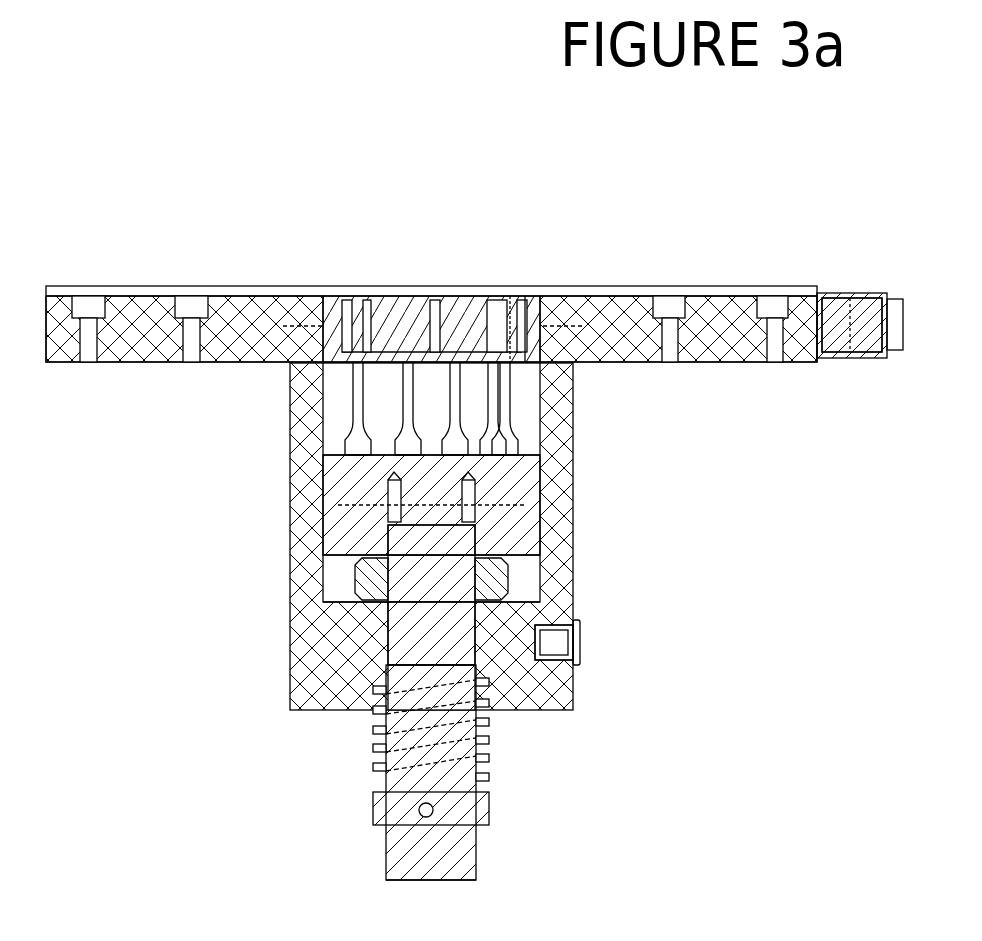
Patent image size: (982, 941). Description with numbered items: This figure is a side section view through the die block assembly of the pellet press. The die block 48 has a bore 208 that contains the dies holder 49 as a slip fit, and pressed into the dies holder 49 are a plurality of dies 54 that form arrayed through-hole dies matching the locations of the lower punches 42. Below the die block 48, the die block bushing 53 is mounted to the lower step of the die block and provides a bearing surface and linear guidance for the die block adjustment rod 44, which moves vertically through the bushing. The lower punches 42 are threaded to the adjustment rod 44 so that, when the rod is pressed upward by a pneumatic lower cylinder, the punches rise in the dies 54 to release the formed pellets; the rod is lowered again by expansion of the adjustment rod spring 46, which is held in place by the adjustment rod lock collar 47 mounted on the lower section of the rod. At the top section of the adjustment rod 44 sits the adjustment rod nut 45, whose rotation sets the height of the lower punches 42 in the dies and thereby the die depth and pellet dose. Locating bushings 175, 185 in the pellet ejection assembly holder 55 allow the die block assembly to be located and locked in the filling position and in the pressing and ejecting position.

The lower punches 42 is at (367, 398).
The die block adjustment rod 44 is at (428, 637).
The adjustment rod nut 45 is at (365, 580).
The adjustment rod spring 46 is at (483, 775).
The adjustment rod lock collar 47 is at (380, 815).
The die block 48 is at (632, 288).
The dies holder 49 is at (525, 296).
The die block bushing 53 is at (382, 637).
The dies 54 is at (348, 296).
The pellet ejection assembly holder 55 is at (553, 518).
The locating bushing 175 is at (575, 650).
The locating bushing 185 is at (554, 642).
The bore 208 is at (522, 415).